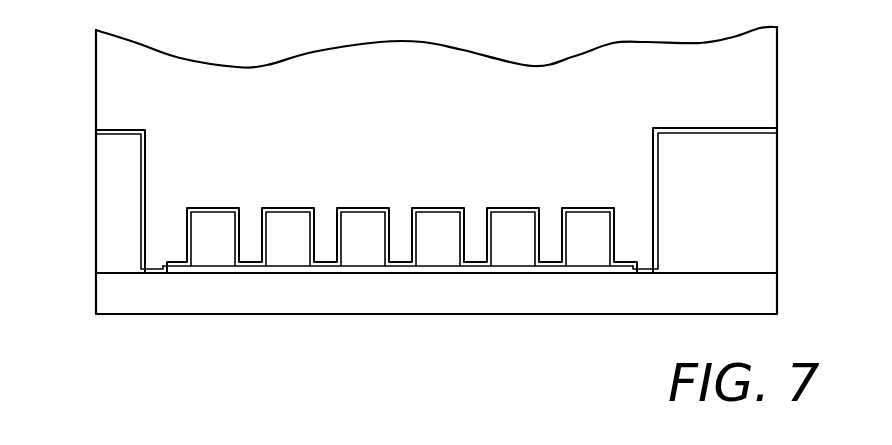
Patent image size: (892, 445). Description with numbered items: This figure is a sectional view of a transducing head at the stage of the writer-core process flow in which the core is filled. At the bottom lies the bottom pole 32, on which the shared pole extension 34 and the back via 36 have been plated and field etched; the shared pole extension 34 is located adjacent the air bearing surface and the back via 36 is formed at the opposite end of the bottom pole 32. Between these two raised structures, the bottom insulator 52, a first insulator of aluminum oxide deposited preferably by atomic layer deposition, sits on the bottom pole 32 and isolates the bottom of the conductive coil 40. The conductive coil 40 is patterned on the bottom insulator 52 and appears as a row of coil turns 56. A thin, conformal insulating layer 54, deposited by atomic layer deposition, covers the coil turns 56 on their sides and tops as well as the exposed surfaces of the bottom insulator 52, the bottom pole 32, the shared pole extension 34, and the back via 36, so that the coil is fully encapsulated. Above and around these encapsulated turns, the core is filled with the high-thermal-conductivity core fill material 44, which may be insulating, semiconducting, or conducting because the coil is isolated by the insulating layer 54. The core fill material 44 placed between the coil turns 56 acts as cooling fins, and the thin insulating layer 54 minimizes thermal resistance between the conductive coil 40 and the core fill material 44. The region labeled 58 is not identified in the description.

The bottom pole 32 is at (123, 293).
The shared pole extension 34 is at (757, 195).
The back via 36 is at (106, 178).
The conductive coil 40 is at (588, 212).
The core fill material 44 is at (328, 132).
The bottom insulator 52 is at (627, 267).
The insulating layer 54 is at (435, 210).
The coil turns 56 is at (287, 223).
The gap between features 58 is at (402, 223).